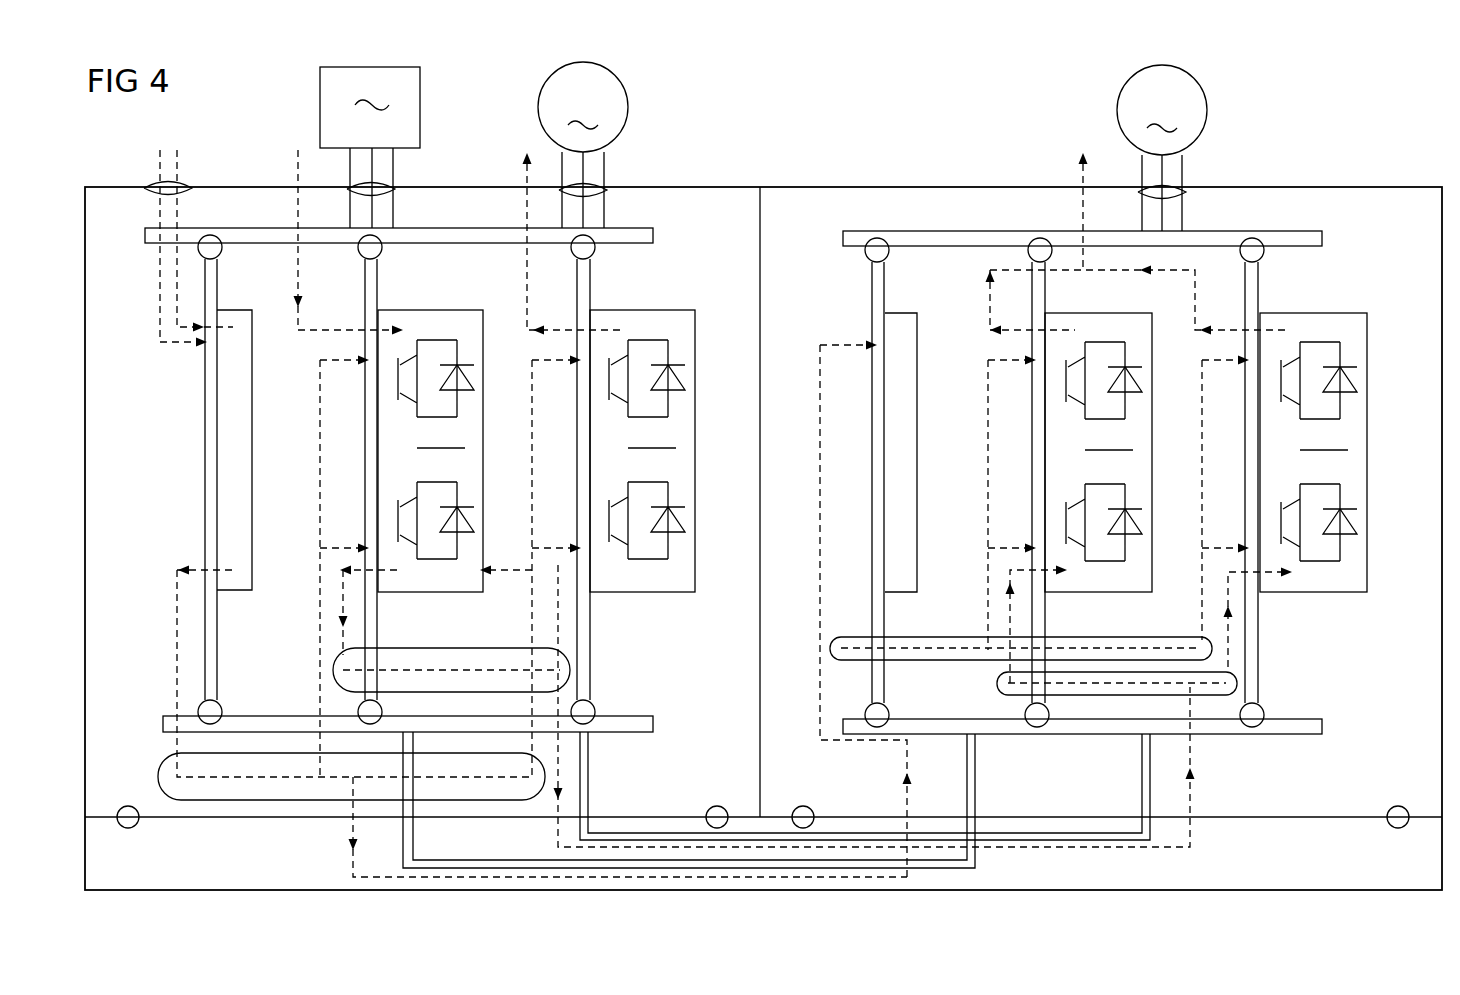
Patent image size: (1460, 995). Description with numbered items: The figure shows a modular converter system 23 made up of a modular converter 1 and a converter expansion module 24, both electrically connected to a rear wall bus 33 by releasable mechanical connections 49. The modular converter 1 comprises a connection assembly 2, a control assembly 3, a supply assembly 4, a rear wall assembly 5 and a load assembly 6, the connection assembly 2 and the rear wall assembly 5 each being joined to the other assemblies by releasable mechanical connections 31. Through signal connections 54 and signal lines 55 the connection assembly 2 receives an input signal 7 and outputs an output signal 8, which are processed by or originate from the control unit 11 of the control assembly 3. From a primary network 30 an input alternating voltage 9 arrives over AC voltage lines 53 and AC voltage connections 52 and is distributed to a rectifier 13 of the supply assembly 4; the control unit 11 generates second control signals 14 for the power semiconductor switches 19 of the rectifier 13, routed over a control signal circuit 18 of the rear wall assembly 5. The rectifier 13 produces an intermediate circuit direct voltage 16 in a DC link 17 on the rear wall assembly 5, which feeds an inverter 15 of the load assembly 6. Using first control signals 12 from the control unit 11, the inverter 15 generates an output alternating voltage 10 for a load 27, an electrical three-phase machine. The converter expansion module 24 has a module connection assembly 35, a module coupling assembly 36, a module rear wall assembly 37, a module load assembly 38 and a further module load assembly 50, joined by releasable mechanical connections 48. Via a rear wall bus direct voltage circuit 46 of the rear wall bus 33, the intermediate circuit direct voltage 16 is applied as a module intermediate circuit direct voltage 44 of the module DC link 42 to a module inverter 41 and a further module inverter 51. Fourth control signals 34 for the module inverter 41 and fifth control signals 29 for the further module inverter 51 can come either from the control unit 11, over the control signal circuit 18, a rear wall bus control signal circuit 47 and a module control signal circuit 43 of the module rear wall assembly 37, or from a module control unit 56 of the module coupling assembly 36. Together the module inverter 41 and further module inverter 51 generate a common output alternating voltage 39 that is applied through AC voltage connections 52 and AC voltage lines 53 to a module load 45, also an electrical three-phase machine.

The modular converter 1 is at (740, 187).
The connection assembly 2 is at (653, 236).
The control assembly 3 is at (218, 262).
The supply assembly 4 is at (378, 262).
The rear wall assembly 5 is at (628, 733).
The load assembly 6 is at (591, 265).
The input signal 7 is at (160, 210).
The output signal 8 is at (185, 210).
The input alternating voltage 9 is at (330, 328).
The output alternating voltage 10 is at (525, 265).
The control unit 11 is at (252, 525).
The first control signals 12 is at (530, 605).
The rectifier 13 is at (483, 465).
The second control signals 14 is at (320, 617).
The inverter 15 is at (696, 338).
The intermediate circuit direct voltage 16 is at (415, 668).
The DC link 17 is at (570, 665).
The control signal circuit 18 is at (372, 805).
The power semiconductor switches 19 is at (422, 400).
The modular converter system 23 is at (1392, 124).
The converter expansion module 24 is at (805, 187).
The load 27 is at (628, 100).
The fifth control signals 29 is at (822, 345).
The primary network 30 is at (420, 85).
The releasable mechanical connections 31 is at (222, 240).
The rear wall bus 33 is at (1335, 892).
The fourth control signals 34 is at (988, 603).
The module connection assembly 35 is at (1322, 236).
The module coupling assembly 36 is at (885, 275).
The module rear wall assembly 37 is at (1322, 727).
The module load assembly 38 is at (1046, 285).
The common output alternating voltage 39 is at (1080, 158).
The module inverter 41 is at (1152, 465).
The module DC link 42 is at (1212, 700).
The module control signal circuit 43 is at (830, 648).
The module intermediate circuit direct voltage 44 is at (1090, 695).
The module load 45 is at (1205, 100).
The rear wall bus direct voltage circuit 46 is at (1067, 840).
The rear wall bus control signal circuit 47 is at (937, 868).
The releasable mechanical connections 48 is at (877, 238).
The releasable mechanical connections 49 is at (128, 805).
The further module load assembly 50 is at (1259, 280).
The further module inverter 51 is at (1368, 338).
The AC voltage connections 52 is at (817, 161).
The AC voltage lines 53 is at (395, 185).
The signal connections 54 is at (202, 235).
The signal lines 55 is at (185, 185).
The module control unit 56 is at (917, 530).